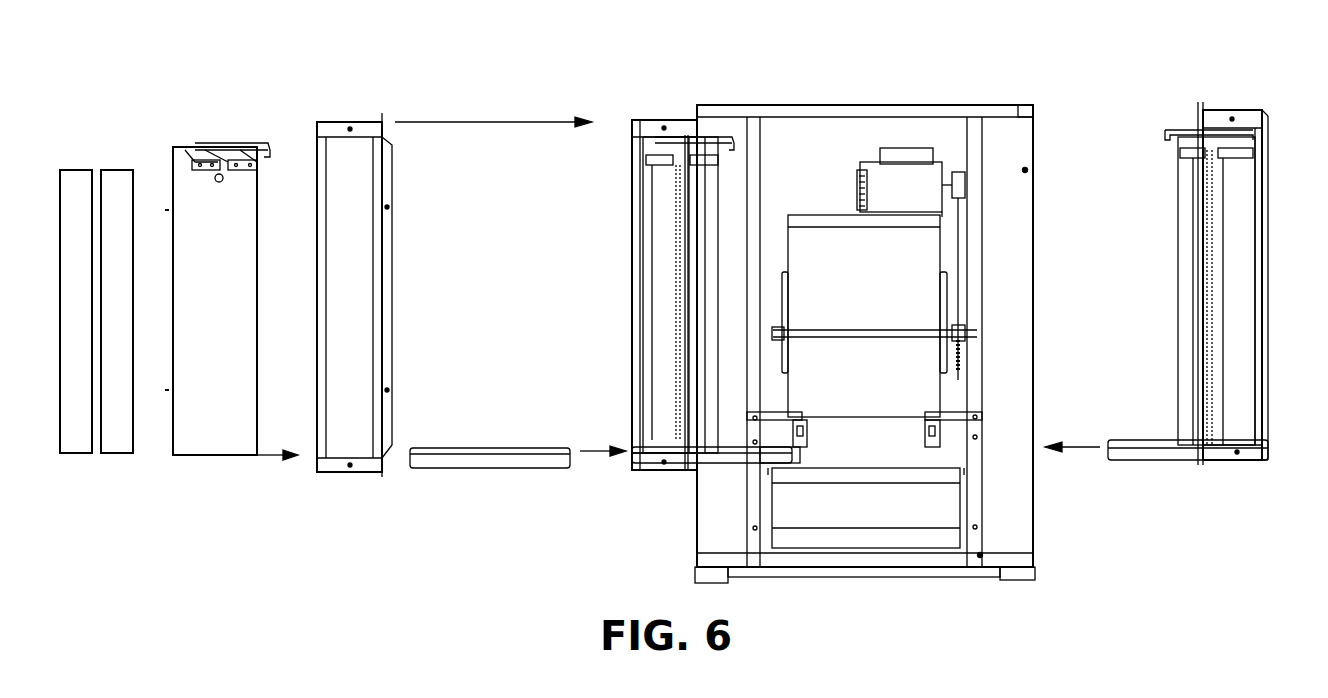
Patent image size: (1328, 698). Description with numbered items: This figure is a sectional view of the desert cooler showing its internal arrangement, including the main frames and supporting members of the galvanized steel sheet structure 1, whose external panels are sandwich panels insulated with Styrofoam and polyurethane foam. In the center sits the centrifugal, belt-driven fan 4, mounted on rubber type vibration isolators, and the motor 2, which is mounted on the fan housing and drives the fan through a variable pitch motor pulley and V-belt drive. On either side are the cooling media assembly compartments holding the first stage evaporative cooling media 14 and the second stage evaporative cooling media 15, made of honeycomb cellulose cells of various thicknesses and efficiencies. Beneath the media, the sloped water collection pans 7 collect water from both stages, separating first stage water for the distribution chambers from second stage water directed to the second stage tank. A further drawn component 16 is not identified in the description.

The galvanized steel sheet structure 1 is at (337, 122).
The motor 2 is at (942, 158).
The fan 4 is at (818, 240).
The water collection pans 7 is at (535, 448).
The first stage evaporative cooling media 14 is at (74, 170).
The second stage evaporative cooling media 15 is at (117, 170).
The mounting panel 16 is at (195, 148).